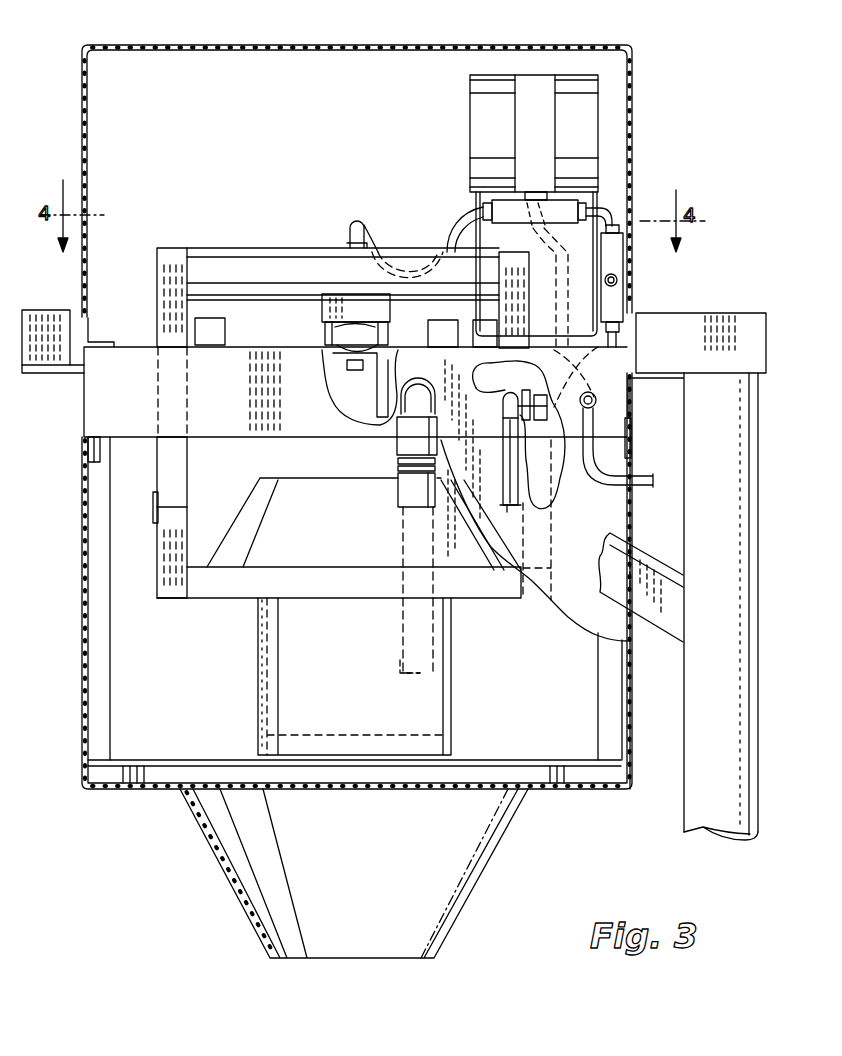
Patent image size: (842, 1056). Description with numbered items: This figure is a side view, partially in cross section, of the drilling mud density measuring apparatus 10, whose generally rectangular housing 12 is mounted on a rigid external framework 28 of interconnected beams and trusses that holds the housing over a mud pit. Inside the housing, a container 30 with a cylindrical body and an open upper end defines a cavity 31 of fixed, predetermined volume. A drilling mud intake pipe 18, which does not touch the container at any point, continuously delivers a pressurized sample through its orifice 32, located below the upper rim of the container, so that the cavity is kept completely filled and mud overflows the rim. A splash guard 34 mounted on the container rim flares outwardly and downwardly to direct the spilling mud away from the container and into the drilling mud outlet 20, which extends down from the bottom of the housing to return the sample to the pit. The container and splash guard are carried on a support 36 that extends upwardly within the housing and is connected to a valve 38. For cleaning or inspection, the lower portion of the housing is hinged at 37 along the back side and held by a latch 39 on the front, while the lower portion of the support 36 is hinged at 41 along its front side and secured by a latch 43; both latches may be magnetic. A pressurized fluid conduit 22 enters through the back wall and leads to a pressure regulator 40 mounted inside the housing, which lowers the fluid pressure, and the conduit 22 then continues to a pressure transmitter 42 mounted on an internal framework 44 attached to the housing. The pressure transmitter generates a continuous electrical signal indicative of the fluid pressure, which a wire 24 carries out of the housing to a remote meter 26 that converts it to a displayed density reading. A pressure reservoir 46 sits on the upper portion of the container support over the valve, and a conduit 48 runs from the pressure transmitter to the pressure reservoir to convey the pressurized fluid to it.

The apparatus 10 is at (713, 284).
The housing 12 is at (82, 498).
The drilling mud intake pipe 18 is at (402, 444).
The drilling mud outlet 20 is at (218, 871).
The pressurized fluid conduit 22 is at (622, 214).
The wire 24 is at (620, 470).
The meter 26 is at (570, 275).
The external framework 28 is at (55, 320).
The container 30 is at (268, 662).
The cavity 31 is at (268, 692).
The orifice 32 is at (447, 688).
The splash guard 34 is at (285, 537).
The support 36 is at (170, 255).
The hinge 37 is at (631, 440).
The valve 38 is at (310, 333).
The latch 39 is at (93, 454).
The pressure regulator 40 is at (614, 296).
The hinge 41 is at (152, 512).
The pressure transmitter 42 is at (585, 135).
The latch 43 is at (552, 415).
The internal framework 44 is at (495, 233).
The pressure reservoir 46 is at (265, 258).
The conduit 48 is at (452, 235).